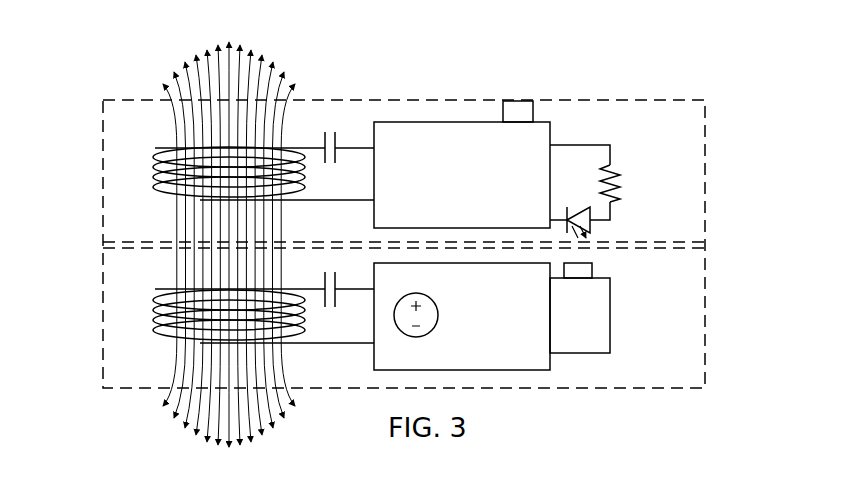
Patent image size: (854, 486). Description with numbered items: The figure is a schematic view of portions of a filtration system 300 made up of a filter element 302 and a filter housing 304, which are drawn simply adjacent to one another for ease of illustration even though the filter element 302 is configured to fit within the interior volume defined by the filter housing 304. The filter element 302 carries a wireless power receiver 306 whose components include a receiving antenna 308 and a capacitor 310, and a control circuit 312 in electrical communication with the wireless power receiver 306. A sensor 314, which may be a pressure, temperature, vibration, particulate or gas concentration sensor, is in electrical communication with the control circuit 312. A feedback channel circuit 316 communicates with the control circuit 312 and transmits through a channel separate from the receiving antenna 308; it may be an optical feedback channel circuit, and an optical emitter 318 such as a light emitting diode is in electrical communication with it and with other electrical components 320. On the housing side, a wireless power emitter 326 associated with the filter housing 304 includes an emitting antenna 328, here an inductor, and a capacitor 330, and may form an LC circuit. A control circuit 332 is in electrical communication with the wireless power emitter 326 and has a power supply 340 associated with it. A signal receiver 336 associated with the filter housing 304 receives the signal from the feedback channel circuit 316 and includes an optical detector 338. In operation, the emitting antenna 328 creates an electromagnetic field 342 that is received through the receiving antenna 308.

The filtration system 300 is at (650, 85).
The filter element 302 is at (697, 163).
The filter housing 304 is at (683, 305).
The wireless power receiver 306 is at (150, 197).
The receiving antenna 308 is at (156, 152).
The capacitor 310 is at (338, 140).
The control circuit 312 is at (405, 122).
The sensor 314 is at (521, 108).
The feedback channel circuit 316 is at (578, 144).
The optical emitter 318 is at (592, 222).
The other electrical components 320 is at (612, 166).
The wireless power emitter 326 is at (150, 335).
The emitting antenna 328 is at (157, 300).
The capacitor 330 is at (338, 281).
The control circuit 332 is at (480, 371).
The signal receiver 336 is at (587, 354).
The optical detector 338 is at (583, 272).
The power supply 340 is at (402, 322).
The electromagnetic field 342 is at (178, 262).